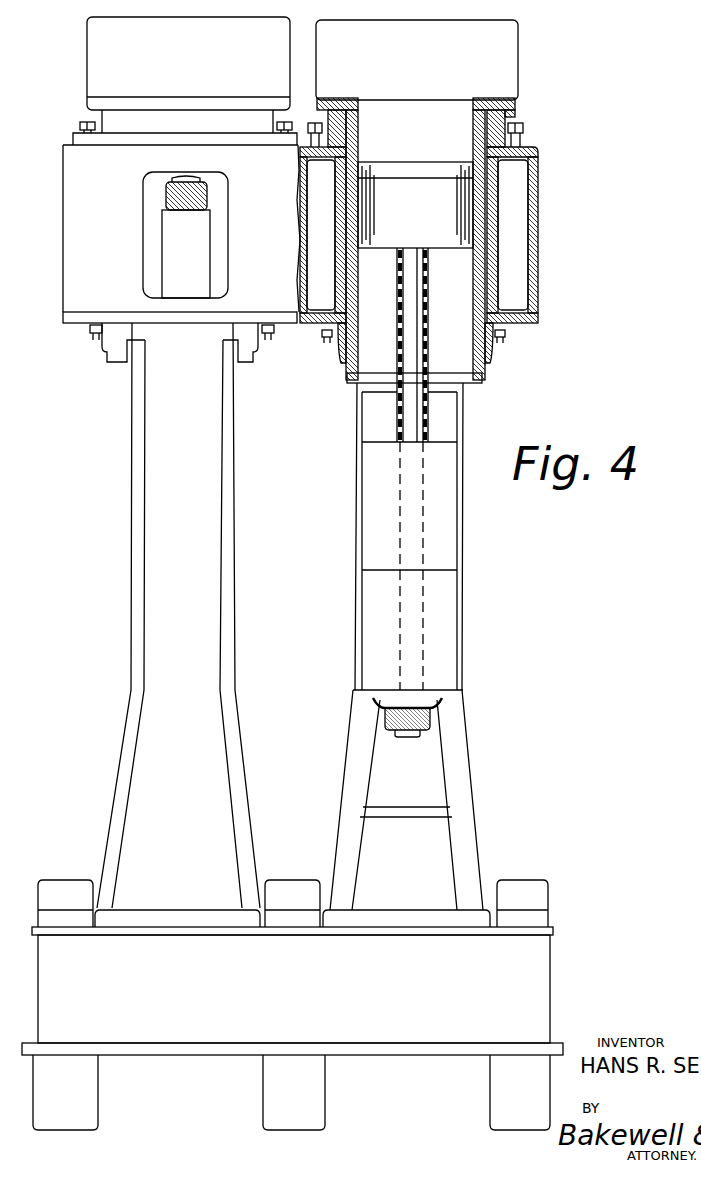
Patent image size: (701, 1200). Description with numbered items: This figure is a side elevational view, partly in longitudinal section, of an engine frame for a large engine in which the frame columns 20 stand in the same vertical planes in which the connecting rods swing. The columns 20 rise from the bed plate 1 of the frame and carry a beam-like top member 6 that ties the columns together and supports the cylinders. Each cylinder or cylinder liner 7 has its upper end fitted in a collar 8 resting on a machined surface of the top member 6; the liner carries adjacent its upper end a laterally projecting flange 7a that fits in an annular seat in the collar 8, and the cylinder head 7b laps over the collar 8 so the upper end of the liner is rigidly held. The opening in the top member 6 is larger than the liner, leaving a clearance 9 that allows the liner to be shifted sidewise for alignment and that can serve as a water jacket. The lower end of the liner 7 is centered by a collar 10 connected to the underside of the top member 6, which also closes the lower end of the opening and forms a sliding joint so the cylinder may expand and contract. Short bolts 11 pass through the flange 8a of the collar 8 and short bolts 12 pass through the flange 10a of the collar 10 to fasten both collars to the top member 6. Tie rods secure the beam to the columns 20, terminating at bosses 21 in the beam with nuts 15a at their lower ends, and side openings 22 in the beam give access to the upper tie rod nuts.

The bed plate 1 is at (503, 985).
The top member 6 is at (537, 168).
The cylinder liner 7 is at (472, 328).
The cylinder top flange 7a is at (345, 105).
The cylinder head 7b is at (470, 62).
The collar 8 is at (508, 110).
The flange 8a is at (530, 140).
The clearance 9 is at (483, 237).
The centering collar 10 is at (490, 353).
The flange 10a is at (510, 328).
The short bolt 11 is at (80, 128).
The short bolt 12 is at (95, 342).
The nut 15a is at (413, 722).
The frame column 20 is at (182, 677).
The boss 21 is at (185, 252).
The opening 22 is at (155, 252).